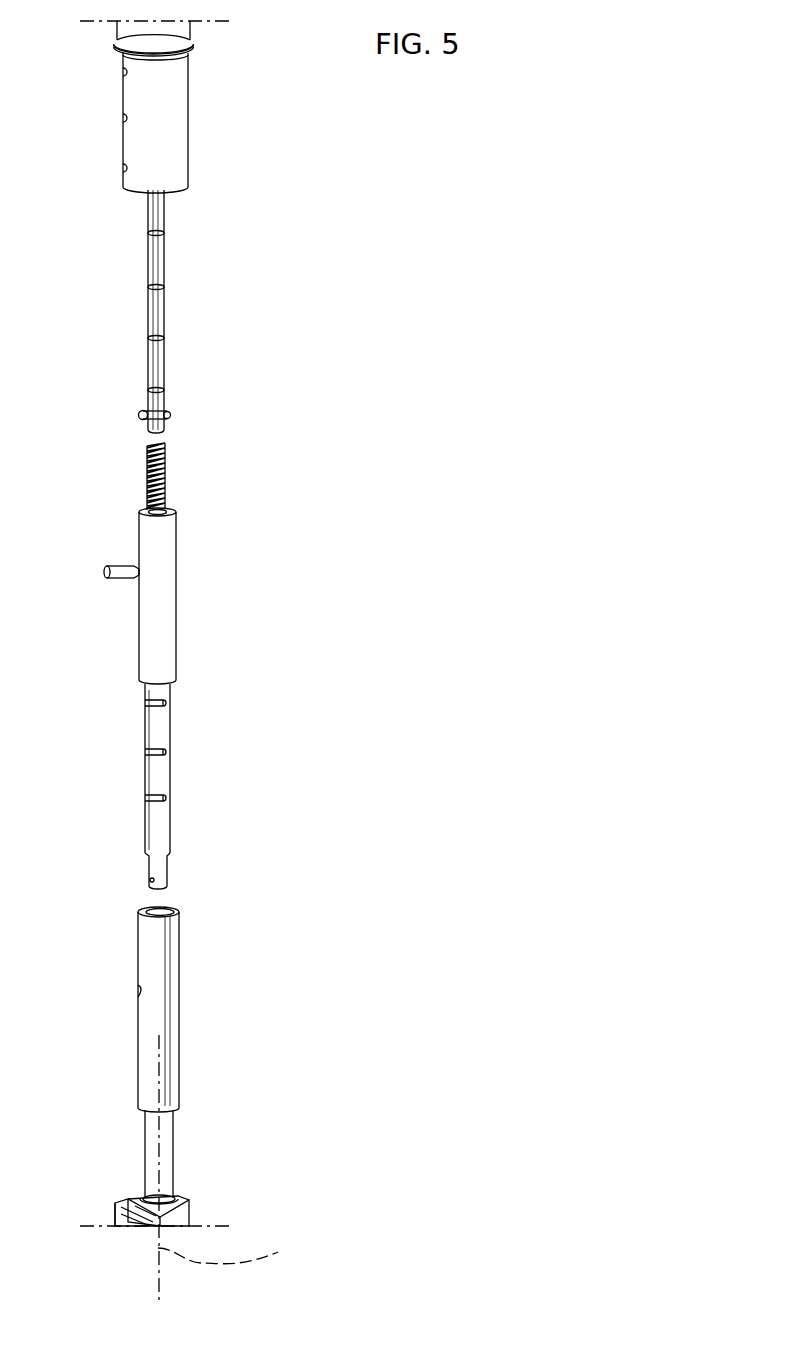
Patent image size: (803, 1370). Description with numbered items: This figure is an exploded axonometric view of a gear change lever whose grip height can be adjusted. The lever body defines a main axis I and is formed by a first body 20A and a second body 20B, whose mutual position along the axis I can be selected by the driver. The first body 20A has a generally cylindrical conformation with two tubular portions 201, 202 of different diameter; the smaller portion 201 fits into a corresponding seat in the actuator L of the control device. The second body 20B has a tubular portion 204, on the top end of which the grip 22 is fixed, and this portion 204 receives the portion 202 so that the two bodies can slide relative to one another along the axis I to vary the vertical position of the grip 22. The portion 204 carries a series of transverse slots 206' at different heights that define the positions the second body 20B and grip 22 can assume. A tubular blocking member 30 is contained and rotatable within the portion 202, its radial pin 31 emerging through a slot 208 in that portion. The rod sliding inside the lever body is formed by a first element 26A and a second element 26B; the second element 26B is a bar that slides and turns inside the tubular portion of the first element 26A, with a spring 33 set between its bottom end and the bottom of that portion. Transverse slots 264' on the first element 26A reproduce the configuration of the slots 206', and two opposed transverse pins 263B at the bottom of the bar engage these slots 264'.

The grip 22 is at (188, 35).
The tubular portion 204 is at (175, 108).
The transverse slots 206' is at (82, 120).
The second body 20B is at (192, 163).
The second element 26B is at (162, 336).
The transverse pins 263B is at (139, 416).
The spring 33 is at (163, 485).
The blocking member 30 is at (165, 602).
The radial pin 31 is at (119, 566).
The first element 26A is at (170, 768).
The transverse slots 264' is at (117, 750).
The slot 208 is at (150, 910).
The tubular portion 202 is at (140, 1036).
The first body 20A is at (182, 1034).
The tubular portion 201 is at (172, 1146).
The actuator L is at (115, 1209).
The main axis I is at (224, 1254).